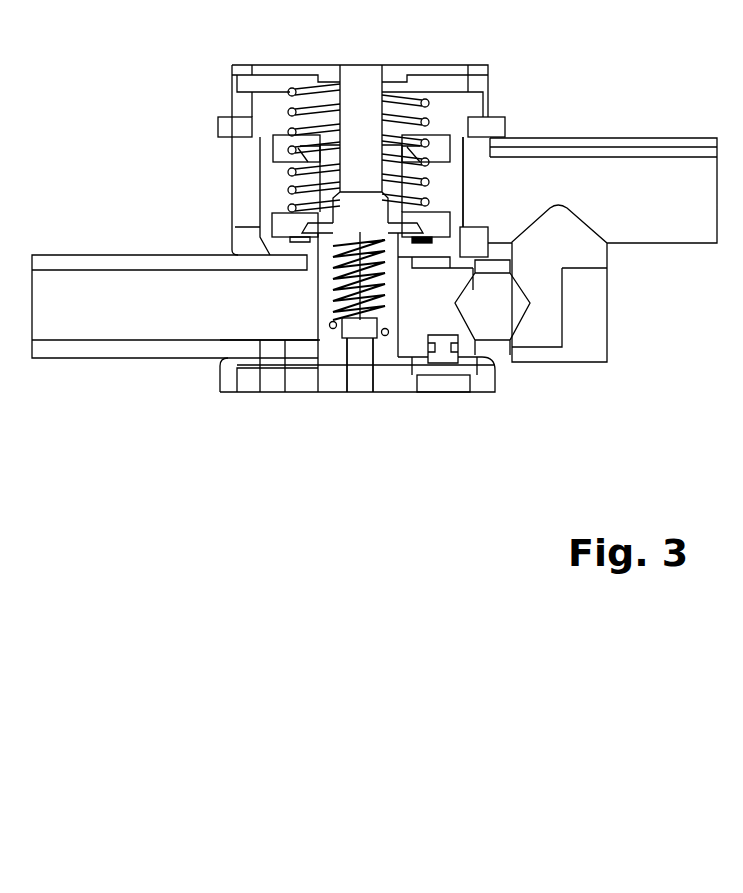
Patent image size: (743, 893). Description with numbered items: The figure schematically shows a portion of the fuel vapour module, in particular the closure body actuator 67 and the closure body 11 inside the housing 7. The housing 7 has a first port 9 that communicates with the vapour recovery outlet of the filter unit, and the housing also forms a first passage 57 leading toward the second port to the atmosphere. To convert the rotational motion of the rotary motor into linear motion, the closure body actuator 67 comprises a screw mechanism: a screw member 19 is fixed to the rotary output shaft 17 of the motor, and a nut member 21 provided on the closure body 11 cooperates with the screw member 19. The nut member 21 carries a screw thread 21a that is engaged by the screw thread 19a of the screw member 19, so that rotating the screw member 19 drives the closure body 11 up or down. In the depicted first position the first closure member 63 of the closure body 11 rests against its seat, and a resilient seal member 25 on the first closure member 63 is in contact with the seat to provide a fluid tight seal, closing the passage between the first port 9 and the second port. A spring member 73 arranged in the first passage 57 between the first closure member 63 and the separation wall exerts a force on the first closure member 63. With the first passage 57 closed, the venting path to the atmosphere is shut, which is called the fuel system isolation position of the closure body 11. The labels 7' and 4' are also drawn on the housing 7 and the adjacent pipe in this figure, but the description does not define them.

The housing 7 is at (320, 161).
The first port 9 is at (90, 298).
The closure body 11 is at (356, 100).
The spring member 73 is at (415, 100).
The first closure member 63 is at (282, 220).
The resilient seal member 25 is at (413, 257).
The housing projection 7' is at (497, 320).
The connection arm 4' is at (586, 250).
The first passage 57 is at (448, 175).
The screw member 19 is at (363, 310).
The rotary output shaft 17 is at (360, 372).
The screw thread 19a is at (348, 330).
The screw thread 21a is at (383, 335).
The nut member 21 is at (318, 331).
The closure body actuator 67 is at (262, 414).